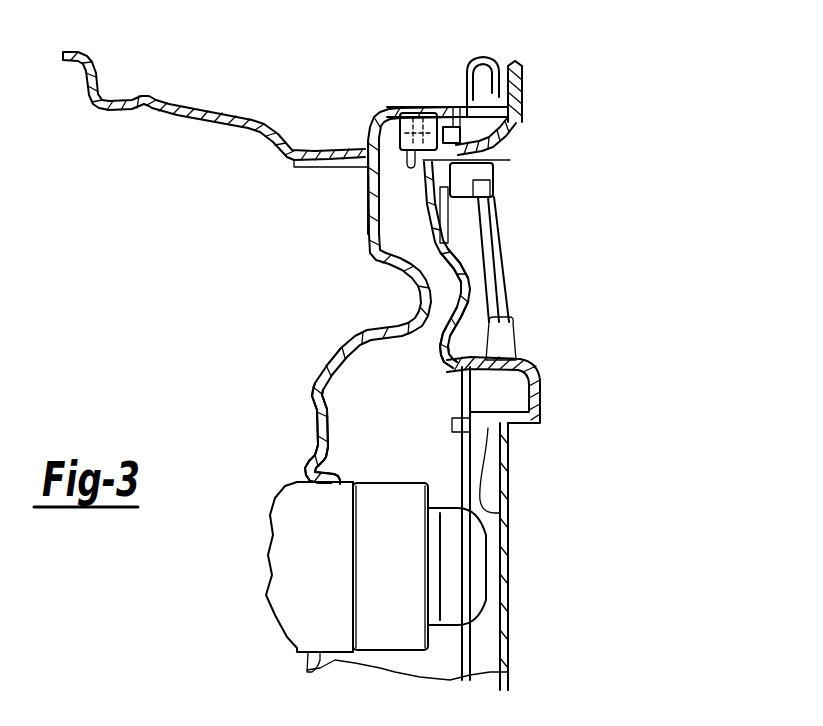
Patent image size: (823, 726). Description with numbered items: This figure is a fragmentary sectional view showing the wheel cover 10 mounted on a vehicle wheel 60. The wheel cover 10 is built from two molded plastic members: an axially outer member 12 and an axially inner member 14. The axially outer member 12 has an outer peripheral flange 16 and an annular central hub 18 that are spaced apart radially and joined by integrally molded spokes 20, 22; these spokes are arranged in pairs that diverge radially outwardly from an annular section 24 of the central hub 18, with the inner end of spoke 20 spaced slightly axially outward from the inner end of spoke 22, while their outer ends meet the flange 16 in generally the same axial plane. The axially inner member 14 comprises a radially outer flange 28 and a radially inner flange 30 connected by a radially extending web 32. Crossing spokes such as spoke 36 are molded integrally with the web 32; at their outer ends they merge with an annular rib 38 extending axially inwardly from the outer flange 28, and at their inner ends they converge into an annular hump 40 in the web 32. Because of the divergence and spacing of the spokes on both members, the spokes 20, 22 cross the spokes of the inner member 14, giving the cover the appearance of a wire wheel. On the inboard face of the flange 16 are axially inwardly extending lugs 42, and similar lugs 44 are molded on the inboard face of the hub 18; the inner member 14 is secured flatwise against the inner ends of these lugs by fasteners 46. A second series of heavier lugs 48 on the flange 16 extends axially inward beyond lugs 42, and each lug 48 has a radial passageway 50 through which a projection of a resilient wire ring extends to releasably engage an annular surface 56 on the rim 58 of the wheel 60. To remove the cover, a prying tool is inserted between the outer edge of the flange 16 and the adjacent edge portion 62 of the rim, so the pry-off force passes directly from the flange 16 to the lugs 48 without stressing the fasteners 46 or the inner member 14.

The wheel cover 10 is at (548, 365).
The axially outer member 12 is at (518, 143).
The axially inner member 14 is at (417, 221).
The outer peripheral flange 16 is at (522, 104).
The annular central hub 18 is at (510, 472).
The spoke 20 is at (494, 285).
The spoke 22 is at (487, 313).
The annular section 24 is at (541, 396).
The radially outer flange 28 is at (457, 122).
The radially inner flange 30 is at (462, 395).
The web 32 is at (441, 367).
The spoke 36 is at (455, 222).
The annular rib 38 is at (492, 170).
The annular hump 40 is at (458, 263).
The lug 42 is at (520, 62).
The lug 44 is at (503, 514).
The fastener 46 is at (447, 120).
The lug 48 is at (372, 188).
The passageway 50 is at (397, 128).
The annular surface 56 is at (405, 107).
The rim 58 is at (257, 121).
The vehicle wheel 60 is at (317, 359).
The edge portion 62 is at (491, 60).